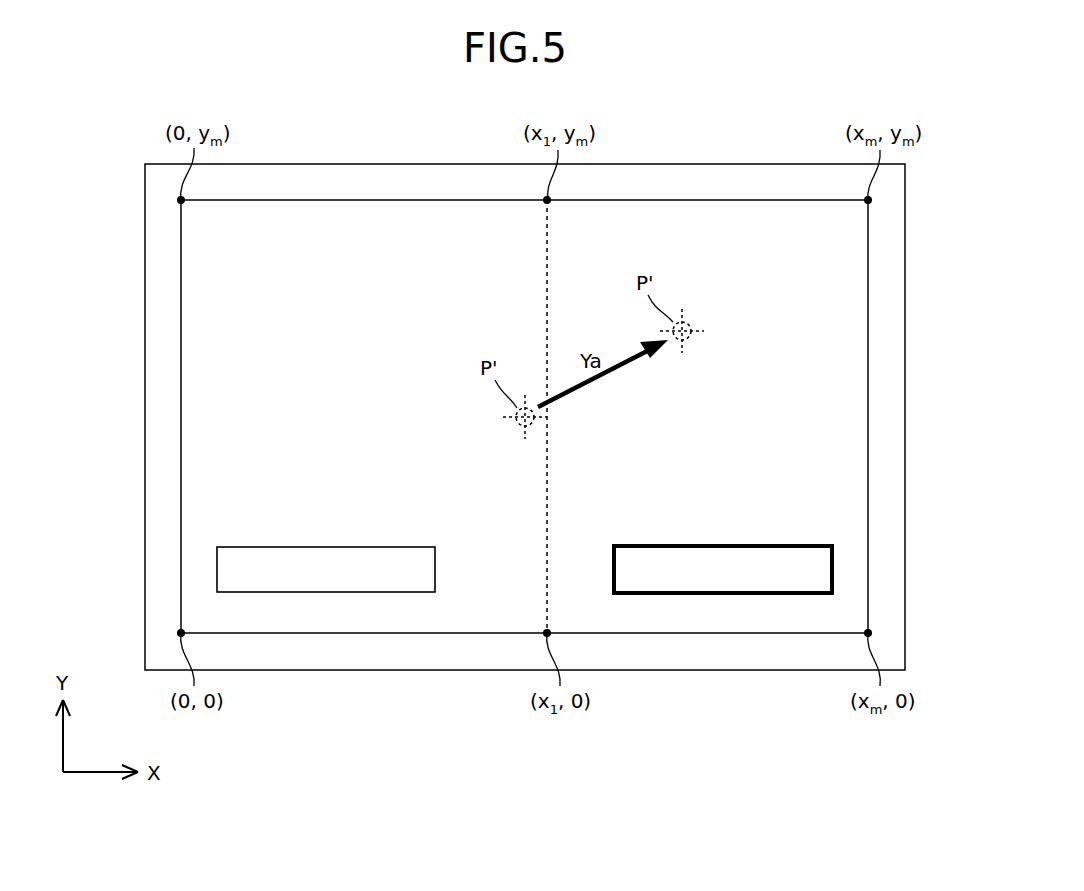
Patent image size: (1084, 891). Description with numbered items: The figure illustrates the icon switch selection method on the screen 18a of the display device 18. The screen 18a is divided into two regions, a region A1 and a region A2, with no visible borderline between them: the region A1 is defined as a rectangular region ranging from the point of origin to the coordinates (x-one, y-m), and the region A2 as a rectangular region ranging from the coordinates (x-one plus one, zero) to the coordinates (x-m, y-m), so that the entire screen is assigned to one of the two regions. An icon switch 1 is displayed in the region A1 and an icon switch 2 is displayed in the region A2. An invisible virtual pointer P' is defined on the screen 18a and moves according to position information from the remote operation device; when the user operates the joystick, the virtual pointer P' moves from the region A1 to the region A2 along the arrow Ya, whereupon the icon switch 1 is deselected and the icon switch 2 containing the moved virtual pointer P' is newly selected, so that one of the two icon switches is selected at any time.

The display device 18 is at (771, 163).
The screen 18a is at (650, 200).
The icon switch 1 is at (393, 547).
The icon switch 2 is at (787, 546).
The region A1 is at (190, 483).
The region A2 is at (850, 483).